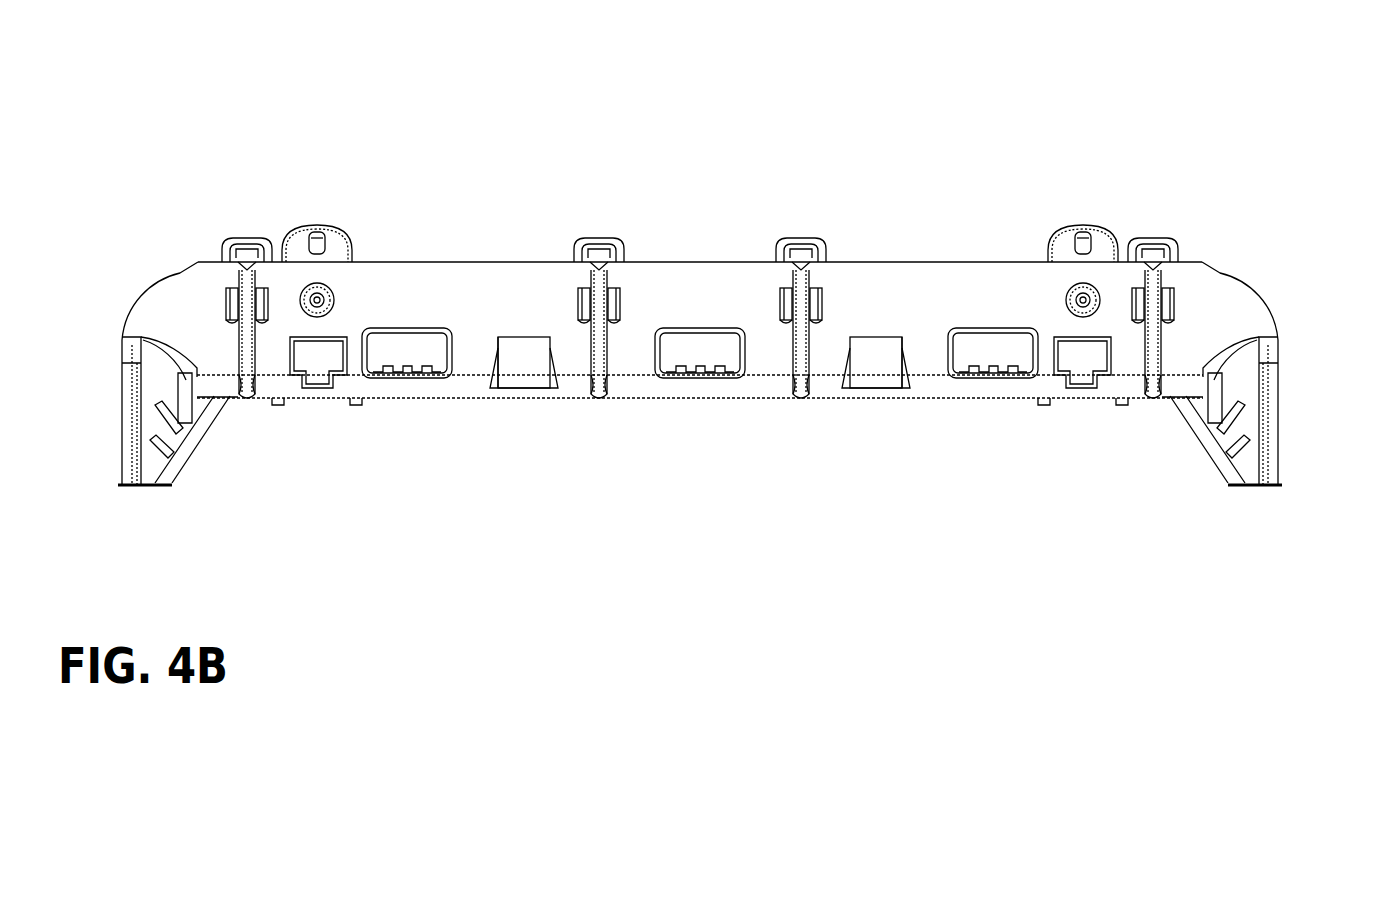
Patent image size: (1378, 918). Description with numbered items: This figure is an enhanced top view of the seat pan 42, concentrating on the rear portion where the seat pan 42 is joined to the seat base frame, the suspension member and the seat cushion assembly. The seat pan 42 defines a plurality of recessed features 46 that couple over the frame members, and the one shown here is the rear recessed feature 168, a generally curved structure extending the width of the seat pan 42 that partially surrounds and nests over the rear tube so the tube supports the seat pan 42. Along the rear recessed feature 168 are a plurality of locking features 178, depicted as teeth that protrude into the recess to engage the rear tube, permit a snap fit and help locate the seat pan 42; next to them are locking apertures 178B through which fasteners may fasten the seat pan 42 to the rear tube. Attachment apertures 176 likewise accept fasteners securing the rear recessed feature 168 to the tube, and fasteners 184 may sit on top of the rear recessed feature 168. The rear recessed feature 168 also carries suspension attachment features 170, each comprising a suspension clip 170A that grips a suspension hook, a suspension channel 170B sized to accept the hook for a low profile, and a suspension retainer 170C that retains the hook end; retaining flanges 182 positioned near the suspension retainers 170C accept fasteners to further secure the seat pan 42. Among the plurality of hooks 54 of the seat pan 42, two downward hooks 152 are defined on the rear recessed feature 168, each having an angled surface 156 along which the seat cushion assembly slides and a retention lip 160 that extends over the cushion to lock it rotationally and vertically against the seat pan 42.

The seat pan 42 is at (1185, 203).
The recessed features 46 is at (1194, 259).
The hooks 54 is at (492, 336).
The downward hook 152 is at (909, 346).
The angled surface 156 is at (527, 352).
The retention lip 160 is at (520, 388).
The rear recessed feature 168 is at (381, 193).
The suspension attachment features 170 is at (228, 282).
The suspension clip 170A is at (236, 298).
The suspension channel 170B is at (247, 355).
The suspension retainer 170C is at (243, 238).
The attachment aperture 176 is at (329, 345).
The locking features 178 is at (403, 372).
The locking apertures 178B is at (406, 330).
The retaining flanges 182 is at (301, 228).
The fasteners 184 is at (301, 308).